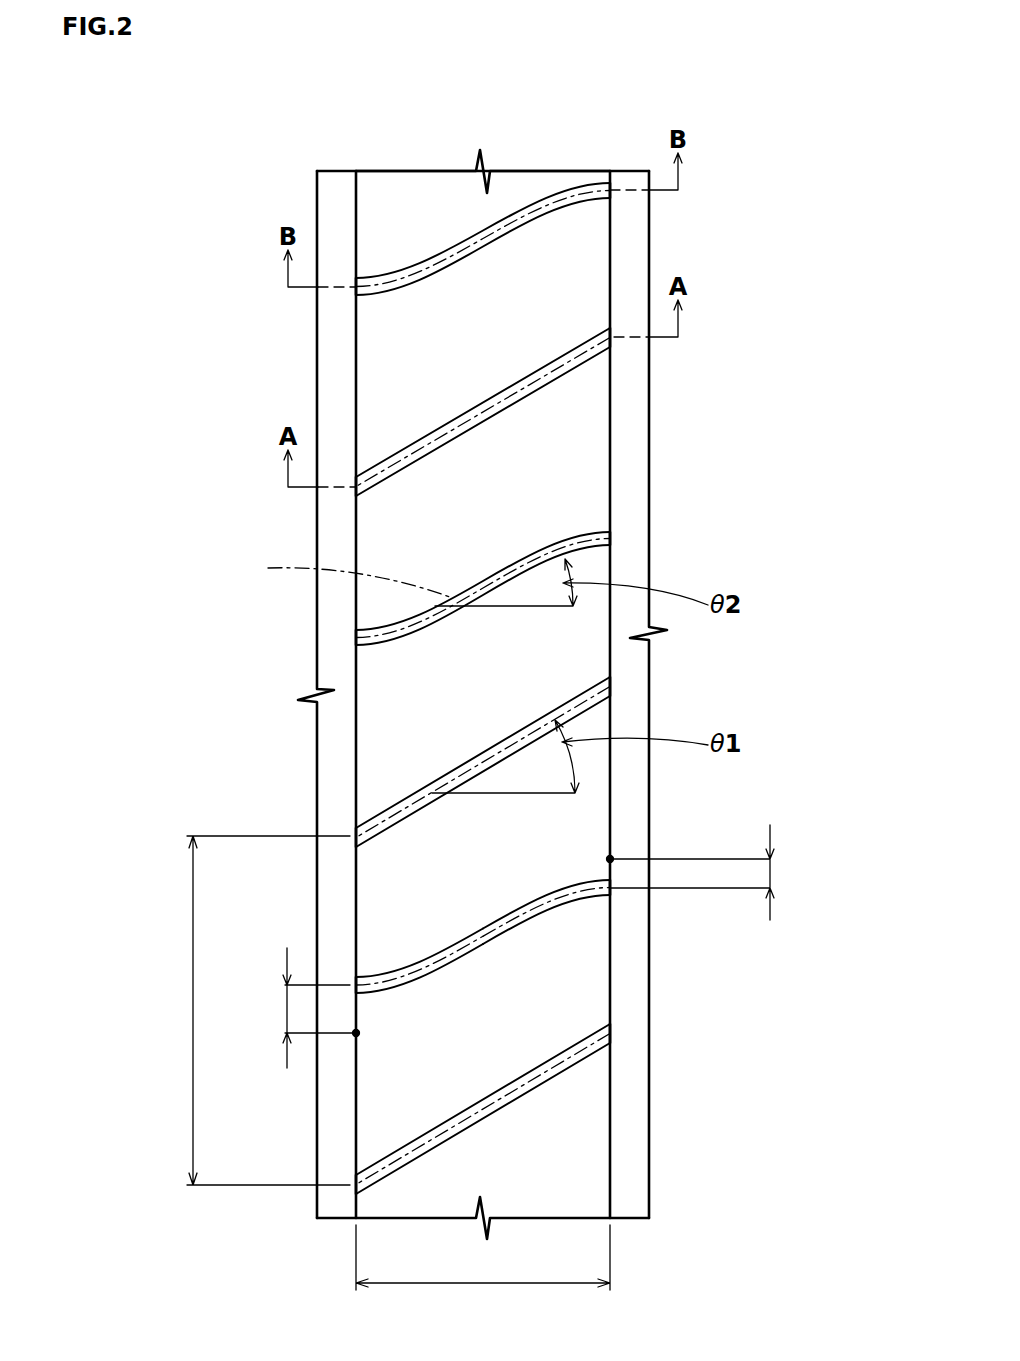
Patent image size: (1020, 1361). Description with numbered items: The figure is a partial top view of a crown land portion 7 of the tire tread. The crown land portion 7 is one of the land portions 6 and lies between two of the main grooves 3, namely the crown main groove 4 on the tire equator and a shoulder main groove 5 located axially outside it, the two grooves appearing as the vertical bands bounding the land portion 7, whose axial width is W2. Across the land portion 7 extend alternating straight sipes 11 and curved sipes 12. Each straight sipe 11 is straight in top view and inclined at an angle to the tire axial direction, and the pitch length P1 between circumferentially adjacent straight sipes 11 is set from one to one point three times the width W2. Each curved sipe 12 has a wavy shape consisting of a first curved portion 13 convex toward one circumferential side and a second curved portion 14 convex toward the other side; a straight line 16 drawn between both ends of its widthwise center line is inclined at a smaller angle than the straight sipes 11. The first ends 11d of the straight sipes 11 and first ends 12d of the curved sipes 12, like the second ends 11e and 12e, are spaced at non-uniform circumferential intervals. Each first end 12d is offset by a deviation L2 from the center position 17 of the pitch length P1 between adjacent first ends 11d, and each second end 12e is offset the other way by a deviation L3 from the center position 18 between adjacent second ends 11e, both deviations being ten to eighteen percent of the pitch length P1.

The main groove 3 is at (537, 653).
The crown main groove 4 is at (635, 230).
The shoulder main groove 5 is at (342, 190).
The land portion 6 is at (483, 151).
The crown land portion 7 is at (418, 205).
The straight sipe 11 is at (508, 410).
The first end of straight sipe 11d is at (618, 687).
The second end of straight sipe 11e is at (349, 822).
The curved sipe 12 is at (510, 555).
The first end of curved sipe 12d is at (616, 542).
The second end of curved sipe 12e is at (345, 633).
The first curved portion 13 is at (405, 987).
The second curved portion 14 is at (566, 912).
The straight line 16 is at (341, 576).
The center position 17 is at (610, 859).
The center position 18 is at (356, 1033).
The pitch length P1 is at (252, 1010).
The deviation L2 is at (710, 872).
The deviation L3 is at (300, 1008).
The width W2 is at (483, 1268).